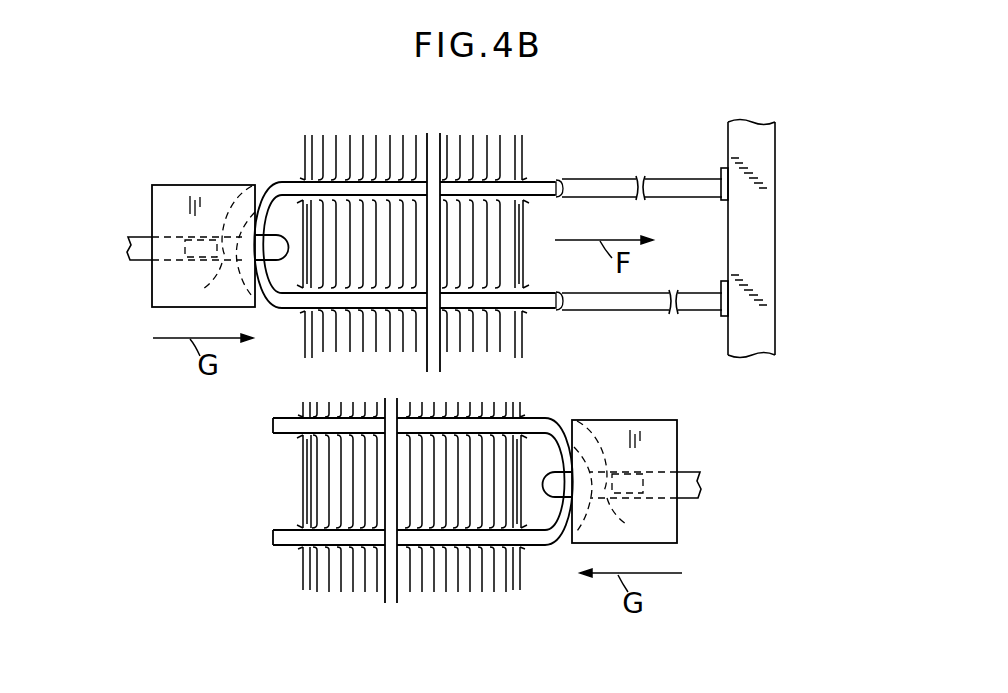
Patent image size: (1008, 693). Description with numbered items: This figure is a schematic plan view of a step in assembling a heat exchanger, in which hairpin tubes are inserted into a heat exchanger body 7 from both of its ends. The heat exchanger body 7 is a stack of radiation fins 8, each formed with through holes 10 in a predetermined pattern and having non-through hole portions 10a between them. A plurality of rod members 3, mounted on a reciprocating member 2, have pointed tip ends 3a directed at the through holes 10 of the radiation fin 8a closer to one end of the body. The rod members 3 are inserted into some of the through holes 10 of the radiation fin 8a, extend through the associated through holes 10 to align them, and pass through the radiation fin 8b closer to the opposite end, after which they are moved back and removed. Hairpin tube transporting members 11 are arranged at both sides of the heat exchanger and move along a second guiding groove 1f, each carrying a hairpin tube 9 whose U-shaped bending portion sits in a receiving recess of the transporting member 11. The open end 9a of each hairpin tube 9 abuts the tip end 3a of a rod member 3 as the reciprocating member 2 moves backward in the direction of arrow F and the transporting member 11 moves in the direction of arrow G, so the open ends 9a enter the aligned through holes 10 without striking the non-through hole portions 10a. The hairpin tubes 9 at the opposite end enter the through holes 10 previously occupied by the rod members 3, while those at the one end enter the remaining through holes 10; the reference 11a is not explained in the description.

The second guiding groove 1f is at (140, 237).
The reciprocating member 2 is at (736, 150).
The rod member 3 is at (623, 178).
The pointed tip end 3a is at (560, 183).
The heat exchanger body 7 is at (396, 346).
The radiation fin 8 is at (417, 137).
The radiation fin closer to one end 8a is at (520, 135).
The radiation fin closer to opposite end 8b is at (306, 135).
The hairpin tube 9 is at (278, 182).
The open end 9a is at (557, 197).
The through hole 10 is at (529, 180).
The non-through hole portion 10a is at (465, 313).
The hairpin tube transporting member 11 is at (205, 185).
The block opening 11a is at (622, 514).